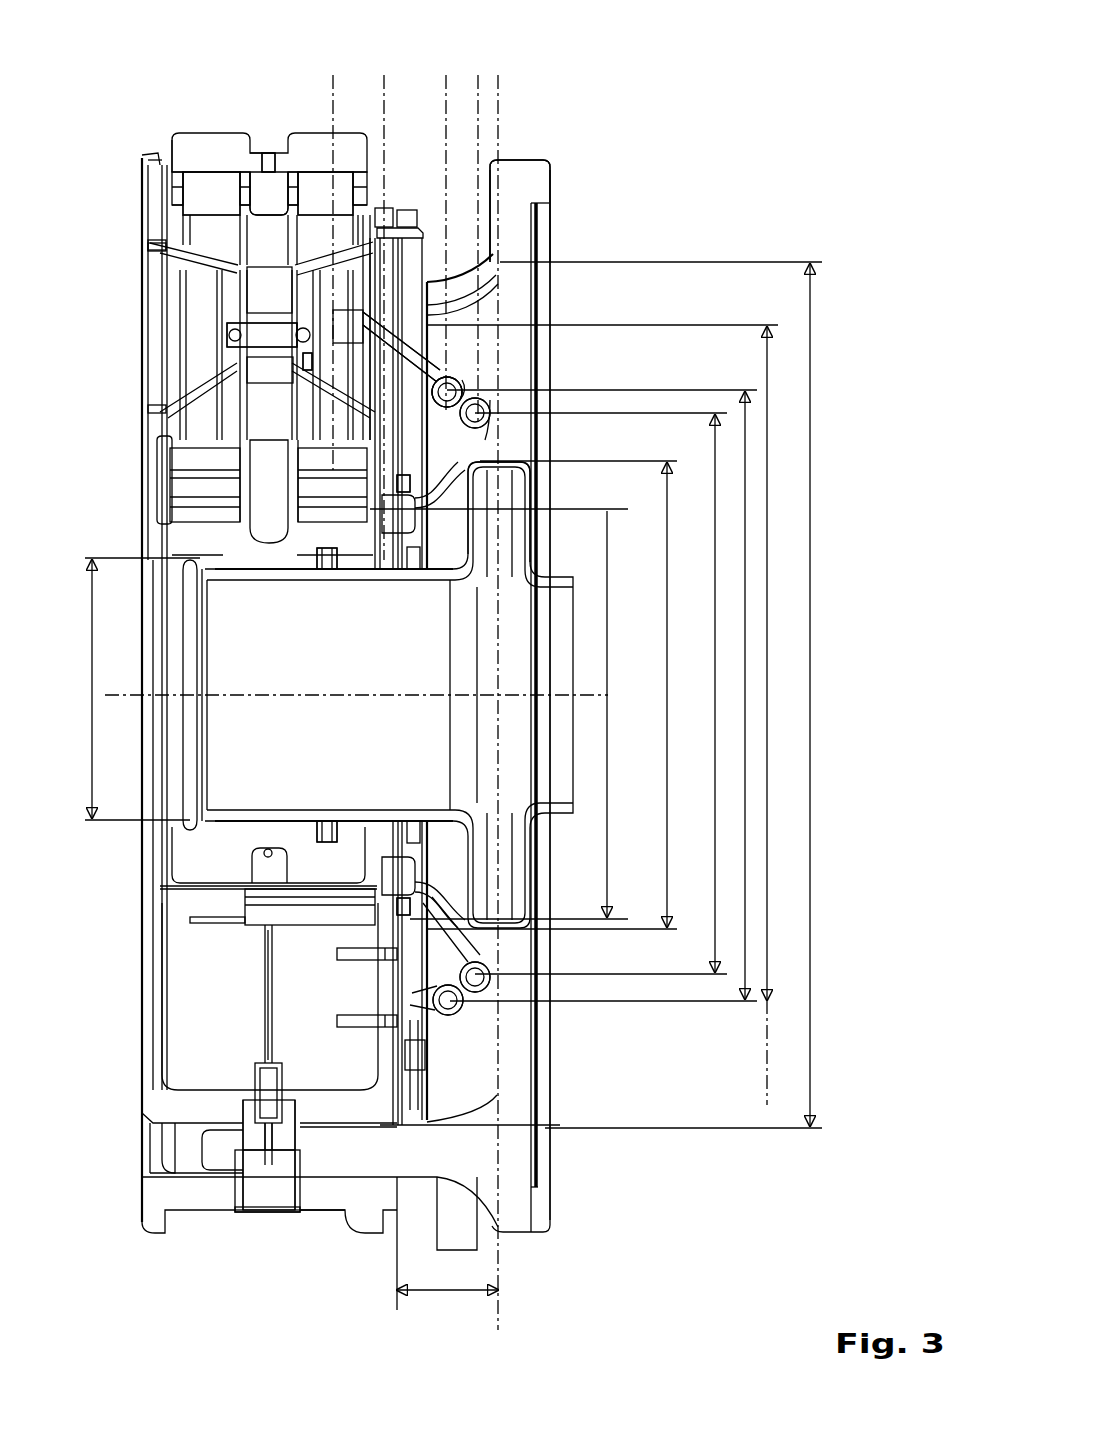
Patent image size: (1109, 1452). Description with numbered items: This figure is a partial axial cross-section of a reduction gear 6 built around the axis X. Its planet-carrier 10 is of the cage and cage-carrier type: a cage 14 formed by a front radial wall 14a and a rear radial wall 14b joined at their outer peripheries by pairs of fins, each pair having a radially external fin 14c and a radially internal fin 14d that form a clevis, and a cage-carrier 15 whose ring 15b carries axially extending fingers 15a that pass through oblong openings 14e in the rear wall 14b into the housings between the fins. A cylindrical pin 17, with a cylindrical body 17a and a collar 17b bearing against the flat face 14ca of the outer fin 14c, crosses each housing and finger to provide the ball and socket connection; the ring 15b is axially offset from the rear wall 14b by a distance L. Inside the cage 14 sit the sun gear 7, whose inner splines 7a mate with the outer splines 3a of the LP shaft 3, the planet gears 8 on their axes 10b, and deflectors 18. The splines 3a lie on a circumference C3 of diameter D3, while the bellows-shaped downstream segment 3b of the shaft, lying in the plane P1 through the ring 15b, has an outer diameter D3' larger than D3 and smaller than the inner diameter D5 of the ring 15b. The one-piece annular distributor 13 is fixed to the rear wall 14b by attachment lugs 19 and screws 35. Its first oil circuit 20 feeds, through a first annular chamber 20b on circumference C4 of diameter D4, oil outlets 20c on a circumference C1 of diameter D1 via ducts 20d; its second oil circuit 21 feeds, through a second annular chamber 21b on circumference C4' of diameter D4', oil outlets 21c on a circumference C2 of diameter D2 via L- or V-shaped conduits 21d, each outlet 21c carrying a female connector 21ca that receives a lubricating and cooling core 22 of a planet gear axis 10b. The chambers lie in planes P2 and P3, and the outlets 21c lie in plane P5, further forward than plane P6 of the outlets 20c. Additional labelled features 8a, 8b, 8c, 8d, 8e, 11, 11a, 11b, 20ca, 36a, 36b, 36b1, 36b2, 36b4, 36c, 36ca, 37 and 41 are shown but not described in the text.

The LP shaft 3 is at (330, 812).
The outer complementary splines 3a is at (262, 821).
The downstream segment 3b is at (537, 530).
The reduction gear 6 is at (598, 208).
The sun gear 7 is at (188, 855).
The inner splines 7a is at (262, 821).
The planet gears 8 is at (168, 128).
The drum side block 8a is at (228, 180).
The drum bolt 8b is at (280, 175).
The drum key 8c is at (268, 165).
The drum rim 8d is at (175, 133).
The drum notch 8e is at (256, 170).
The planet-carrier 10 is at (563, 152).
The axes of the planet gears 10b is at (170, 231).
The hub housing 11 is at (163, 177).
The housing block 11a is at (210, 180).
The housing ledge 11b is at (200, 208).
The distributor 13 is at (470, 388).
The cage 14 is at (357, 1214).
The front radial wall 14a is at (165, 1015).
The rear radial wall 14b is at (440, 1075).
The radially external fin 14c is at (185, 1195).
The flat face 14ca is at (325, 1215).
The radially internal fin 14d is at (200, 1108).
The oblong openings 14e is at (410, 1182).
The cage-carrier 15 is at (549, 1236).
The finger 15a is at (215, 1150).
The ring 15b is at (520, 170).
The cylindrical pin 17 is at (262, 1215).
The cylindrical body 17a is at (278, 1180).
The collar 17b is at (245, 1215).
The deflectors 18 is at (165, 973).
The attachment lugs 19 is at (420, 1038).
The first oil circuit 20 is at (492, 413).
The first annular chamber 20b is at (492, 413).
The oil outlets 20c is at (380, 533).
The bolt head 20ca is at (380, 533).
The ducts 20d is at (455, 493).
The second oil circuit 21 is at (455, 373).
The second annular chamber 21b is at (455, 373).
The oil outlets 21c is at (428, 325).
The female connector 21ca is at (245, 325).
The conduits 21d is at (407, 330).
The lubricating and cooling cores 22 is at (180, 273).
The screws 35 is at (357, 1018).
The plate 36a is at (390, 918).
The rod 36b is at (272, 928).
The rod upper end 36b1 is at (240, 893).
The rod shaft 36b2 is at (265, 973).
The rod tab 36b4 is at (205, 925).
The rod lower end 36c is at (255, 1081).
The rod lower bushing 36ca is at (255, 1081).
The sleeve 37 is at (282, 1078).
The fastener 41 is at (402, 212).
The axis X is at (565, 688).
The axial offset distance L is at (447, 1307).
The plane P1 is at (498, 100).
The plane P2 is at (446, 95).
The plane P3 is at (478, 95).
The plane P5 is at (333, 75).
The plane P6 is at (384, 95).
The first circumference C1 is at (519, 904).
The second circumference C2 is at (603, 308).
The circumference C3 is at (120, 678).
The circumference C4 is at (601, 401).
The circumference C4' is at (602, 373).
The diameter D1 is at (510, 713).
The diameter D2 is at (769, 716).
The diameter D3 is at (70, 689).
The outer diameter D3' is at (569, 695).
The diameter D4 is at (603, 694).
The diameter D4' is at (609, 696).
The inner diameter D5 is at (665, 695).